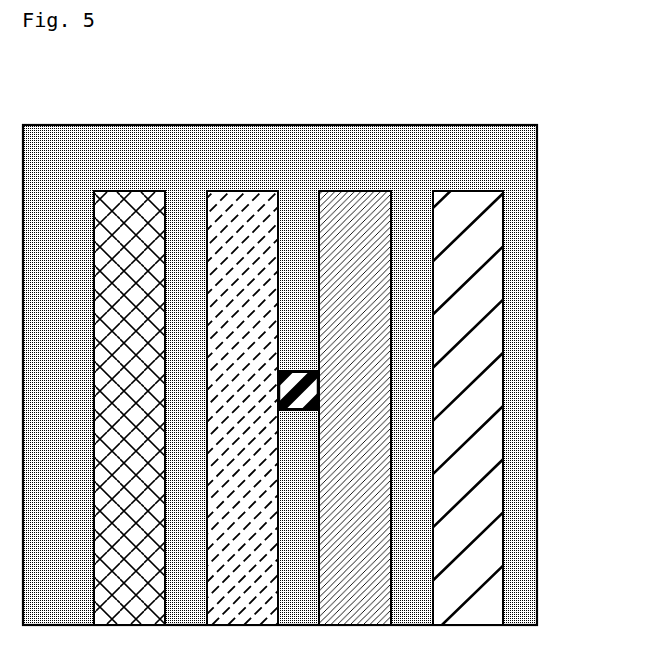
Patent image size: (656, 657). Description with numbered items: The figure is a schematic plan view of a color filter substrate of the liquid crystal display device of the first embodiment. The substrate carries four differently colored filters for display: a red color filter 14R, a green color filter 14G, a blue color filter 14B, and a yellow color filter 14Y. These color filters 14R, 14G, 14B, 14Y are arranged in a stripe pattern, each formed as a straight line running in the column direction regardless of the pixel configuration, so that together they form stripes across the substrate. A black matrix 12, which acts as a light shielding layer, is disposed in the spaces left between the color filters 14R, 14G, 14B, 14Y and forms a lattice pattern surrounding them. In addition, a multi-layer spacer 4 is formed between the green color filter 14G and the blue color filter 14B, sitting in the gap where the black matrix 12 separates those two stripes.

The black matrix 12 is at (527, 152).
The red color filter 14R is at (124, 200).
The green color filter 14G is at (242, 200).
The blue color filter 14B is at (353, 200).
The yellow color filter 14Y is at (467, 200).
The multi-layer spacer 4 is at (310, 390).